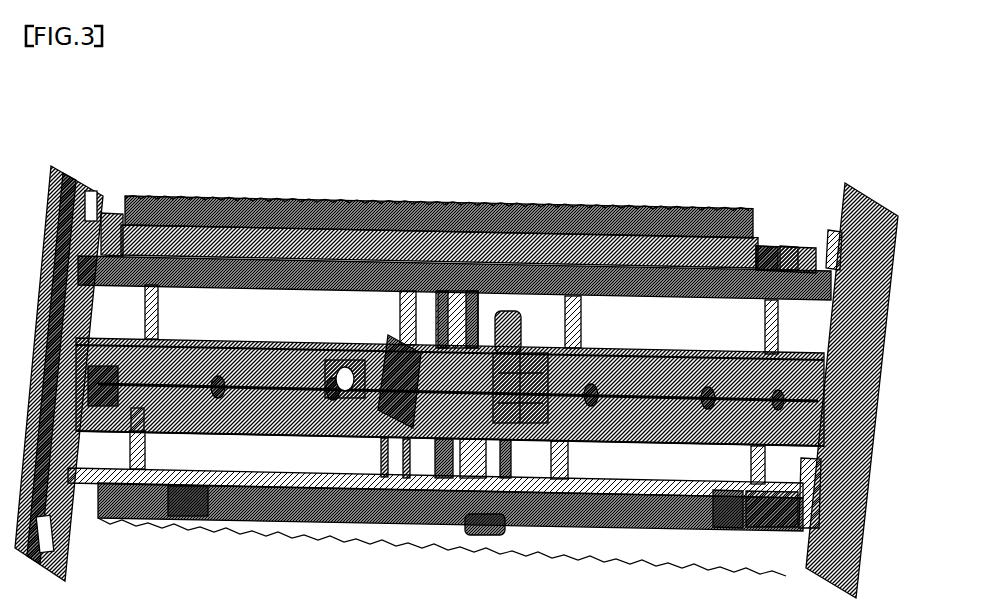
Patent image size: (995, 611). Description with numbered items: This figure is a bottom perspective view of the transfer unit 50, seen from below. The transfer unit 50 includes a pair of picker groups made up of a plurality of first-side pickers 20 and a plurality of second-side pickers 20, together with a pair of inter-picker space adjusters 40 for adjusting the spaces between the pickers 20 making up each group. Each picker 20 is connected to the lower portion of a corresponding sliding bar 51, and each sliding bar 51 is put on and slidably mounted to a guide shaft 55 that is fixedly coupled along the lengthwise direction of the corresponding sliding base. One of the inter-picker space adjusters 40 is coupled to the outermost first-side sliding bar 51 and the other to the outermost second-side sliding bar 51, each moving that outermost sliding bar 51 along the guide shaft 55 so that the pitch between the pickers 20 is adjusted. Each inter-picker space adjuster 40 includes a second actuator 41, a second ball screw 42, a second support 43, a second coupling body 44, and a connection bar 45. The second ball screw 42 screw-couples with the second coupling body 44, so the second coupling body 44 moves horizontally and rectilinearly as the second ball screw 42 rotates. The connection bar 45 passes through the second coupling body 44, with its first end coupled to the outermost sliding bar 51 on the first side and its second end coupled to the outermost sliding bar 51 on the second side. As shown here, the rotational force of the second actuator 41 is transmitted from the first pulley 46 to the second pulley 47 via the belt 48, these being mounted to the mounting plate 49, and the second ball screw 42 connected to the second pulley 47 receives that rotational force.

The picker 20 is at (597, 525).
The inter-picker space adjuster 40 is at (212, 190).
The second actuator 41 is at (346, 370).
The second ball screw 42 is at (260, 383).
The second support 43 is at (90, 390).
The second coupling body 44 is at (180, 503).
The connection bar 45 is at (128, 424).
The first pulley 46 is at (390, 345).
The second pulley 47 is at (414, 385).
The belt 48 is at (412, 487).
The mounting plate 49 is at (383, 470).
The transfer unit 50 is at (445, 96).
The sliding bar 51 is at (745, 240).
The guide shaft 55 is at (770, 240).